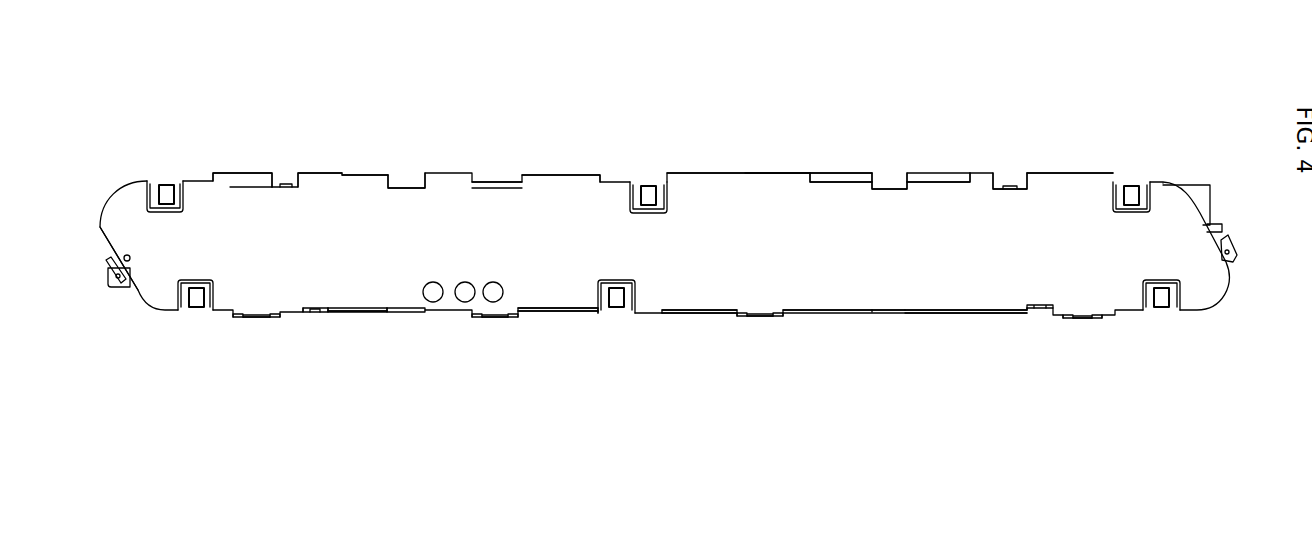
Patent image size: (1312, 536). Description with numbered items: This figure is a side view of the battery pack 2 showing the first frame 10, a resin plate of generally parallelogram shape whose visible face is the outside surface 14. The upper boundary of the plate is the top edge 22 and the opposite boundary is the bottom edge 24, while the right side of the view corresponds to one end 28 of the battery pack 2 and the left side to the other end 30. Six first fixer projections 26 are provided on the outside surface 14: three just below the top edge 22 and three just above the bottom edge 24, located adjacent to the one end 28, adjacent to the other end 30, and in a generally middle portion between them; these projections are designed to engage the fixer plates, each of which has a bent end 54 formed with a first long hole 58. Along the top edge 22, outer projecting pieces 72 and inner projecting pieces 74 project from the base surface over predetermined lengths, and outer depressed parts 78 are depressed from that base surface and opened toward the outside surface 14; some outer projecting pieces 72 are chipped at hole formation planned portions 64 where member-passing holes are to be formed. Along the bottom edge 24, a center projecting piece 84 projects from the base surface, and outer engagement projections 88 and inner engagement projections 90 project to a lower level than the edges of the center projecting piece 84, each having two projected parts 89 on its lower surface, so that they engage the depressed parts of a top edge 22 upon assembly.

The battery pack 2 is at (1232, 106).
The first frame 10 is at (938, 268).
The outside surface 14 is at (158, 270).
The top edge 22 is at (745, 173).
The bottom edge 24 is at (828, 310).
The first fixer projections 26 is at (166, 181).
The one end 28 is at (1200, 210).
The other end 30 is at (105, 253).
The bent end 54 is at (158, 181).
The first long hole 58 is at (175, 181).
The hole formation planned portions 64 is at (395, 188).
The outer projecting pieces 72 is at (366, 175).
The inner projecting pieces 74 is at (322, 173).
The outer depressed parts 78 is at (238, 173).
The center projecting piece 84 is at (358, 310).
The outer engagement projections 88 is at (253, 318).
The projected parts 89 is at (237, 318).
The inner engagement projections 90 is at (760, 316).